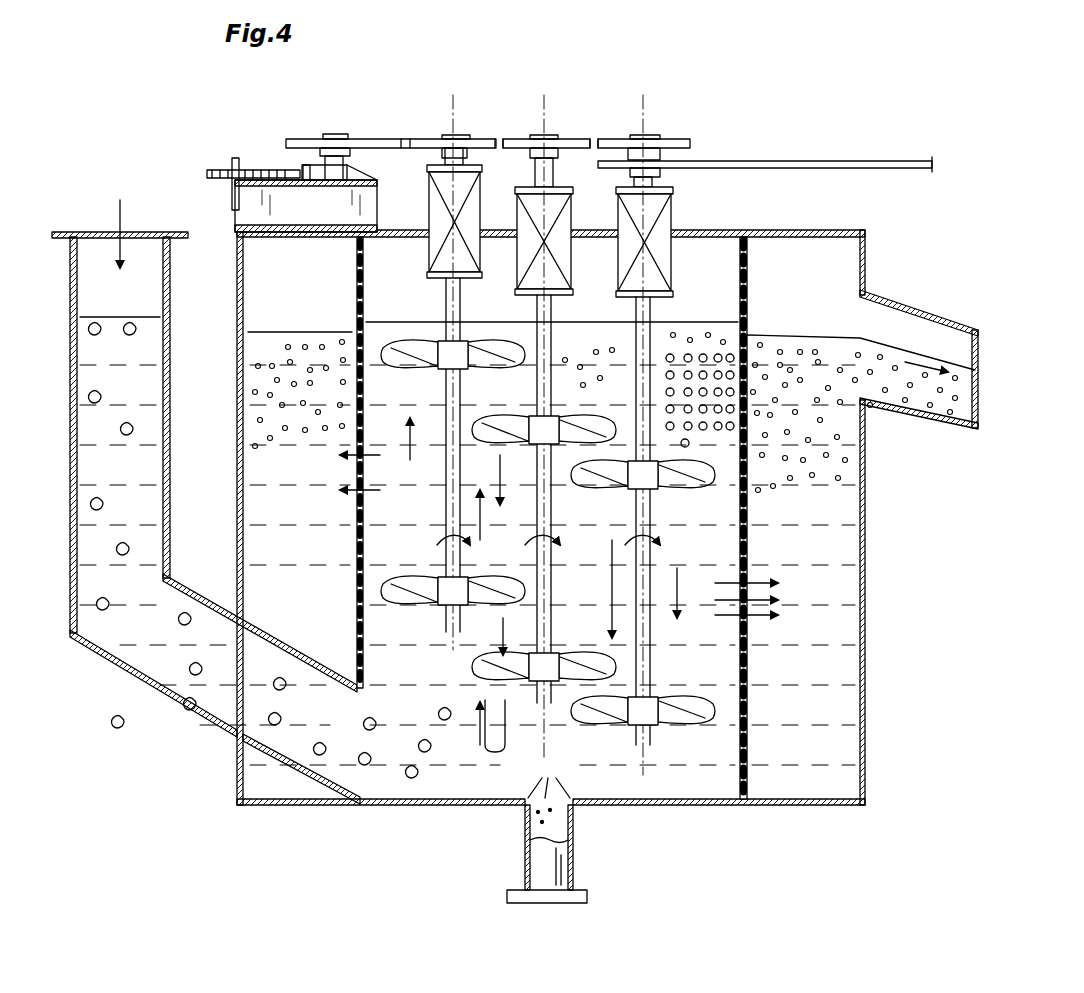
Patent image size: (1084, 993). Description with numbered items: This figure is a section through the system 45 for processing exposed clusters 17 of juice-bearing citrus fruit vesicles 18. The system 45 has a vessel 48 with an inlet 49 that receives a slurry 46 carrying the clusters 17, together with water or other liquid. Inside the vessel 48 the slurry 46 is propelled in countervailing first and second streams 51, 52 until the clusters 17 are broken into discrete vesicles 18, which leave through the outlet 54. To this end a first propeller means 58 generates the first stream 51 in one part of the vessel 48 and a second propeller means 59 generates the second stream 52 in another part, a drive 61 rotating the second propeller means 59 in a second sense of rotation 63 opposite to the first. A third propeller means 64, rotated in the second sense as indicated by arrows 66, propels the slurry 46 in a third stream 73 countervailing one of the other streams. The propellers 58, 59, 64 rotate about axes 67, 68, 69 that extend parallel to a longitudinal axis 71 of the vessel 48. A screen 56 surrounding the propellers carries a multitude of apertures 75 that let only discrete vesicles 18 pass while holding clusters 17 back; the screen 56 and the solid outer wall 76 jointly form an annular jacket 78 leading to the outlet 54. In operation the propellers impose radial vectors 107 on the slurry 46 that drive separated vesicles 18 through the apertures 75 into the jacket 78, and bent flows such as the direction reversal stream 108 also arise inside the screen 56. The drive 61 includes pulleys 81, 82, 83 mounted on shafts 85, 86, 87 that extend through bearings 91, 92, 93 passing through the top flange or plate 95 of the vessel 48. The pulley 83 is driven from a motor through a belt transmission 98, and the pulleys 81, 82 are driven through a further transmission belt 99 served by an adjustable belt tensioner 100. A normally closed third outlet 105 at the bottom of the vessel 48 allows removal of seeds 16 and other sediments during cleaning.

The seeds 16 is at (549, 791).
The clusters 17 is at (128, 430).
The juice-bearing vesicles 18 is at (324, 345).
The system 45 is at (318, 286).
The slurry 46 is at (150, 440).
The vessel 48 is at (237, 518).
The inlet 49 is at (170, 478).
The first stream 51 is at (498, 518).
The second stream 52 is at (512, 478).
The outlet 54 is at (940, 318).
The screen 56 is at (748, 768).
The first propeller means 58 is at (410, 360).
The second propeller means 59 is at (480, 672).
The drive 61 is at (503, 125).
The second sense of rotation 63 is at (558, 542).
The third propeller means 64 is at (705, 470).
The arrows 66 is at (655, 542).
The axis 67 is at (446, 492).
The axis 68 is at (551, 592).
The axis 69 is at (650, 645).
The longitudinal axis 71 is at (548, 742).
The third stream 73 is at (607, 600).
The apertures 75 is at (748, 315).
The solid outer wall 76 is at (865, 635).
The jacket 78 is at (312, 584).
The pulley 81 is at (428, 139).
The pulley 82 is at (565, 139).
The pulley 83 is at (688, 155).
The shaft 85 is at (445, 298).
The shaft 86 is at (535, 300).
The shaft 87 is at (652, 305).
The bearing 91 is at (427, 258).
The bearing 92 is at (515, 258).
The bearing 93 is at (616, 258).
The top flange or plate 95 is at (397, 230).
The belt transmission 98 is at (765, 168).
The further transmission belt 99 is at (392, 139).
The adjustable belt tensioner 100 is at (312, 139).
The third outlet 105 is at (573, 868).
The radial vectors 107 is at (345, 458).
The direction reversal stream 108 is at (480, 743).